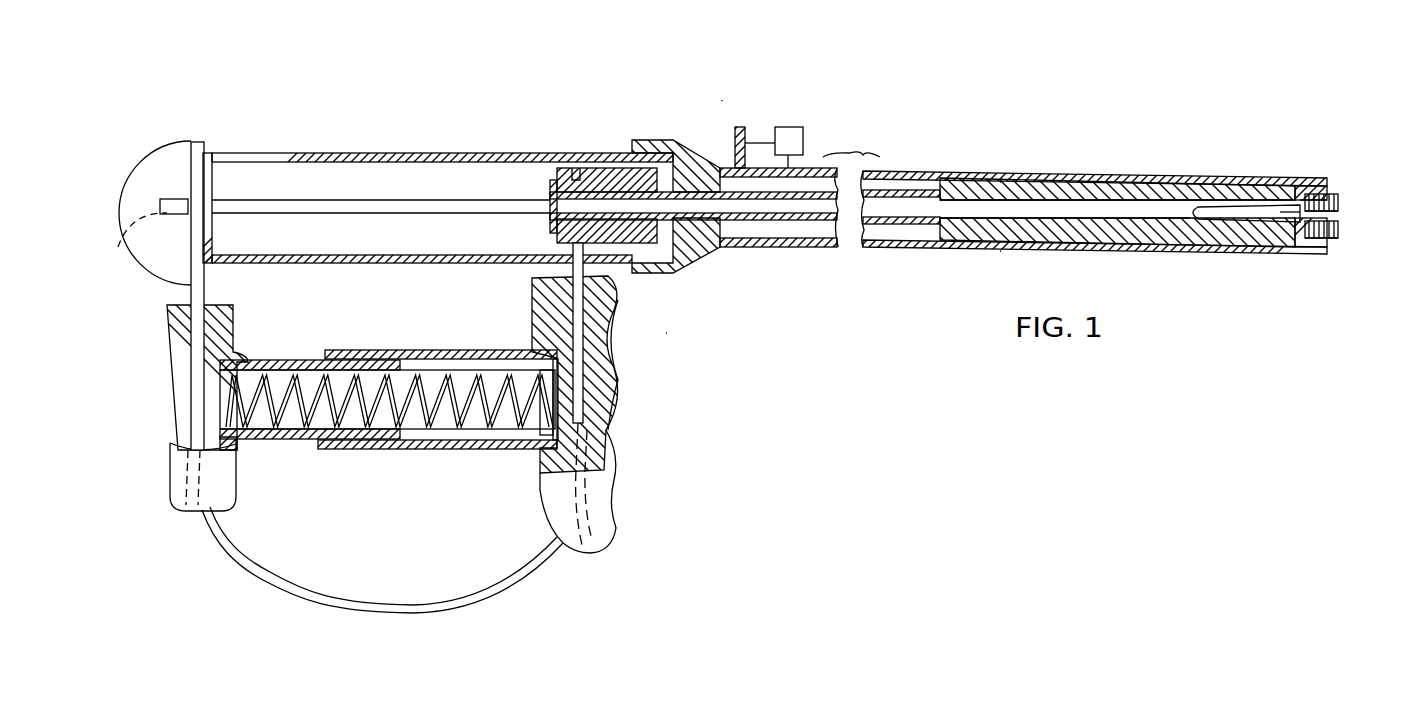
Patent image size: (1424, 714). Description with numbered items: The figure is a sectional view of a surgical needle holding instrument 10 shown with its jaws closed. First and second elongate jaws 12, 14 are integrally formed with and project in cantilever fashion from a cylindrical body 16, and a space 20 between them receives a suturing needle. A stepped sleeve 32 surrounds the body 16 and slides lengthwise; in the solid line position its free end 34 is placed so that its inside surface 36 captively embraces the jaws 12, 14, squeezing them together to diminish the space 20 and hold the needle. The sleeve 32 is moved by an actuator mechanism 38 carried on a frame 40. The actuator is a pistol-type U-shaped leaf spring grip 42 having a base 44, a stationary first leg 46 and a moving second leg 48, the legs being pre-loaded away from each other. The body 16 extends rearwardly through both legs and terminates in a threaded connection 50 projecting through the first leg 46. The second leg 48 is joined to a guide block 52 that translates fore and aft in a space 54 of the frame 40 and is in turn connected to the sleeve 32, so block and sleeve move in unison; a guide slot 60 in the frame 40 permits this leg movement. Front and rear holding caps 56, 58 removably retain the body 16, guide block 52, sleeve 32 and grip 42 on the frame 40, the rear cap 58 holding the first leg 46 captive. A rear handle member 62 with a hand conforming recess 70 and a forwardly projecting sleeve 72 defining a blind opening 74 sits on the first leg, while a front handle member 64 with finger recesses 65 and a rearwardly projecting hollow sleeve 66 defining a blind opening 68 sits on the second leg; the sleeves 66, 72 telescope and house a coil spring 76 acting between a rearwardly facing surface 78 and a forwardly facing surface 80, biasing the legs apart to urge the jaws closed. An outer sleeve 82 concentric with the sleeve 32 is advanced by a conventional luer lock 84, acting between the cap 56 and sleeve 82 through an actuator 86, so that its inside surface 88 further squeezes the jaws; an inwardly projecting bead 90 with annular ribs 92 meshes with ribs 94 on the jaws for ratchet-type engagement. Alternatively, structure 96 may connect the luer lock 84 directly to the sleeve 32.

The needle holding instrument 10 is at (725, 97).
The first elongate jaw 12 is at (1345, 196).
The second elongate jaw 14 is at (1342, 232).
The cylindrical body 16 is at (377, 205).
The space 20 is at (1300, 250).
The stepped sleeve 32 is at (965, 180).
The free end of the sleeve 34 is at (1208, 170).
The inside surface 36 is at (1147, 200).
The actuator mechanism 38 is at (664, 331).
The frame 40 is at (260, 153).
The leaf spring grip 42 is at (518, 586).
The base 44 is at (358, 603).
The first leg 46 is at (190, 292).
The second leg 48 is at (573, 262).
The threaded connection 50 is at (118, 245).
The guide block 52 is at (612, 168).
The space 54 is at (317, 163).
The front holding cap 56 is at (690, 165).
The rear holding cap 58 is at (138, 193).
The guide slot 60 is at (370, 263).
The rear handle member 62 is at (175, 448).
The front handle member 64 is at (600, 538).
The finger recesses 65 is at (606, 345).
The hollow sleeve 66 is at (395, 449).
The blind opening 68 is at (475, 449).
The hand conforming recess 70 is at (178, 385).
The forwardly projecting sleeve 72 is at (300, 445).
The blind opening 74 is at (290, 355).
The coil spring 76 is at (488, 392).
The rearwardly facing surface 78 is at (545, 405).
The forwardly facing surface 80 is at (232, 445).
The outer sleeve 82 is at (900, 250).
The luer lock 84 is at (740, 127).
The actuator 86 is at (745, 133).
The inside surface 88 is at (1290, 190).
The bead 90 is at (1330, 190).
The annular ribs 92 is at (1342, 215).
The ribs 94 is at (1318, 245).
The structure 96 is at (803, 140).